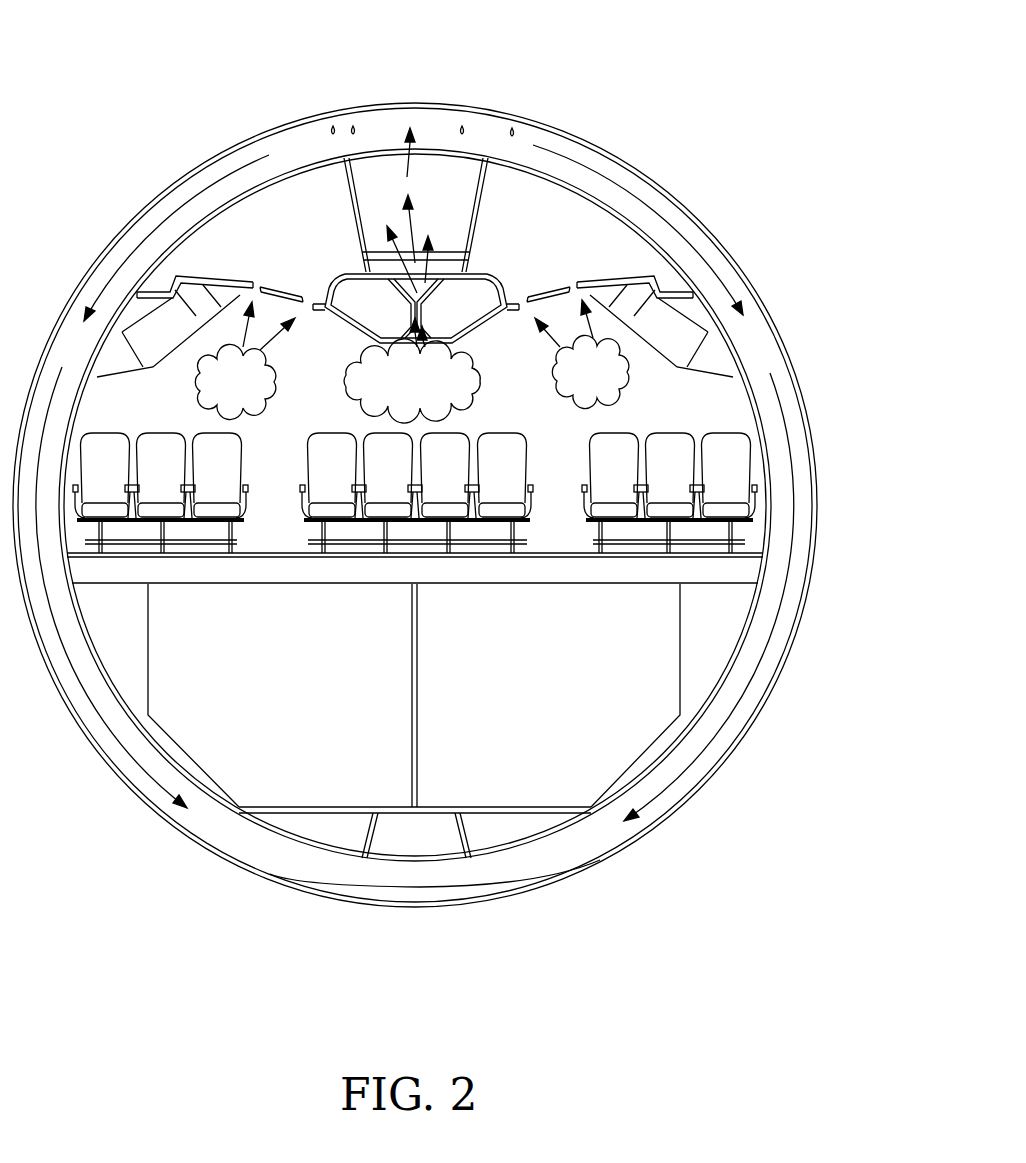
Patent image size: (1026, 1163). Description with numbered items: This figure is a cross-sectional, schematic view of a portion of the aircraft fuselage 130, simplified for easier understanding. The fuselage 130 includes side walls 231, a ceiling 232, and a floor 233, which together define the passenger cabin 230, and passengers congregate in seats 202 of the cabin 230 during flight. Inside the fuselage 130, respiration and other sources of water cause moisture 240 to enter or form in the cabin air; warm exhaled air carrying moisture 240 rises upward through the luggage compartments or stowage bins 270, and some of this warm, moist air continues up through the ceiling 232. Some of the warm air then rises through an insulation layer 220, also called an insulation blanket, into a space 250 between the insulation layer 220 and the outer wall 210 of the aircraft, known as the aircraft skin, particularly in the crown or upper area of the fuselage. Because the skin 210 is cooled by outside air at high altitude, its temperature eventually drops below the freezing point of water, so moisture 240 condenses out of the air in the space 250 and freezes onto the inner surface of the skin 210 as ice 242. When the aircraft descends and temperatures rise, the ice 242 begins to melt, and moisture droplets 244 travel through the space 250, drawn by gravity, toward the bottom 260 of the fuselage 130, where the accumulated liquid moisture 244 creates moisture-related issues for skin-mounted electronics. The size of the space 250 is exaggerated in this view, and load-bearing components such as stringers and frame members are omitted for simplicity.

The fuselage 130 is at (110, 793).
The seats 202 is at (513, 452).
The outer wall 210 is at (637, 167).
The insulation layer 220 is at (740, 343).
The passenger cabin 230 is at (305, 384).
The side walls 231 is at (748, 400).
The ceiling 232 is at (547, 285).
The floor 233 is at (545, 560).
The moisture 240 is at (262, 394).
The ice 242 is at (408, 118).
The moisture droplets 244 is at (515, 132).
The space 250 is at (293, 152).
The bottom 260 is at (455, 893).
The luggage compartments/stowage bins 270 is at (173, 320).